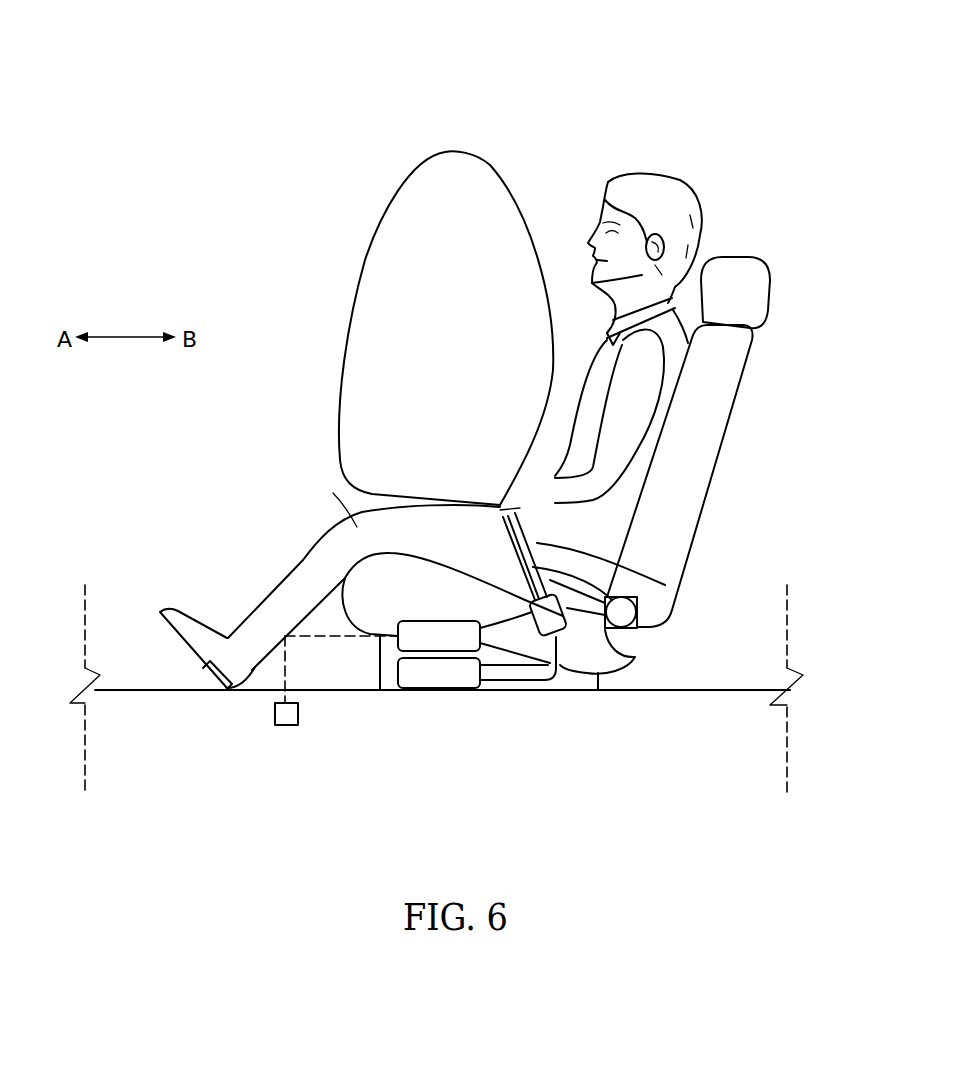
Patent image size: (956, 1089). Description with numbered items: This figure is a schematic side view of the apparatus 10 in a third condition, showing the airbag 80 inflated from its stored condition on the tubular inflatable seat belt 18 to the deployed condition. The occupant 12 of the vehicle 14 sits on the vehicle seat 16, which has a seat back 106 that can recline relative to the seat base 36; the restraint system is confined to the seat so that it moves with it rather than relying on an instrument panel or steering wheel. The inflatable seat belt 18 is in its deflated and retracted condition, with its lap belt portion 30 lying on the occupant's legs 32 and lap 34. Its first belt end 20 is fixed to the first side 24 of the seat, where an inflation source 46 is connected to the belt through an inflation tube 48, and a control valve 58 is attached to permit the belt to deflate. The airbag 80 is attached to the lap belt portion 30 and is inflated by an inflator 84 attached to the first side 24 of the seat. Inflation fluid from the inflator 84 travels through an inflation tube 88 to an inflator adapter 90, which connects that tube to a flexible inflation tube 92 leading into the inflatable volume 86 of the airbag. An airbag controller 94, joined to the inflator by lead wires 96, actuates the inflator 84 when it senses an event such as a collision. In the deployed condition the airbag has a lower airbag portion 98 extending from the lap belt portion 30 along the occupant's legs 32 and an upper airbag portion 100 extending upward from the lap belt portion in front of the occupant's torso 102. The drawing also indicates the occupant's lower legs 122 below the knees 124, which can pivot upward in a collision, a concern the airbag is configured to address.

The apparatus 10 is at (195, 42).
The occupant 12 is at (685, 205).
The vehicle 14 is at (745, 692).
The vehicle seat 16 is at (705, 447).
The tubular inflatable seat belt 18 is at (537, 537).
The first belt end 20 is at (665, 585).
The first side of the vehicle seat 24 is at (633, 655).
The lap belt portion 30 is at (500, 512).
The legs 32 is at (342, 528).
The lap 34 is at (452, 600).
The seat base 36 is at (635, 679).
The inflation source 46 is at (412, 672).
The inflation tube 48 is at (557, 657).
The control valve 58 is at (597, 673).
The airbag 80 is at (420, 328).
The inflator 84 is at (452, 648).
The inflatable volume 86 is at (420, 328).
The inflation tube 88 is at (510, 632).
The inflator adapter 90 is at (637, 610).
The flexible inflation tube 92 is at (640, 610).
The airbag controller 94 is at (275, 716).
The lead wires 96 is at (288, 665).
The lower airbag portion 98 is at (420, 328).
The upper airbag portion 100 is at (478, 200).
The torso 102 is at (695, 442).
The seat back 106 is at (710, 442).
The lower legs 122 is at (250, 617).
The knees 124 is at (323, 498).